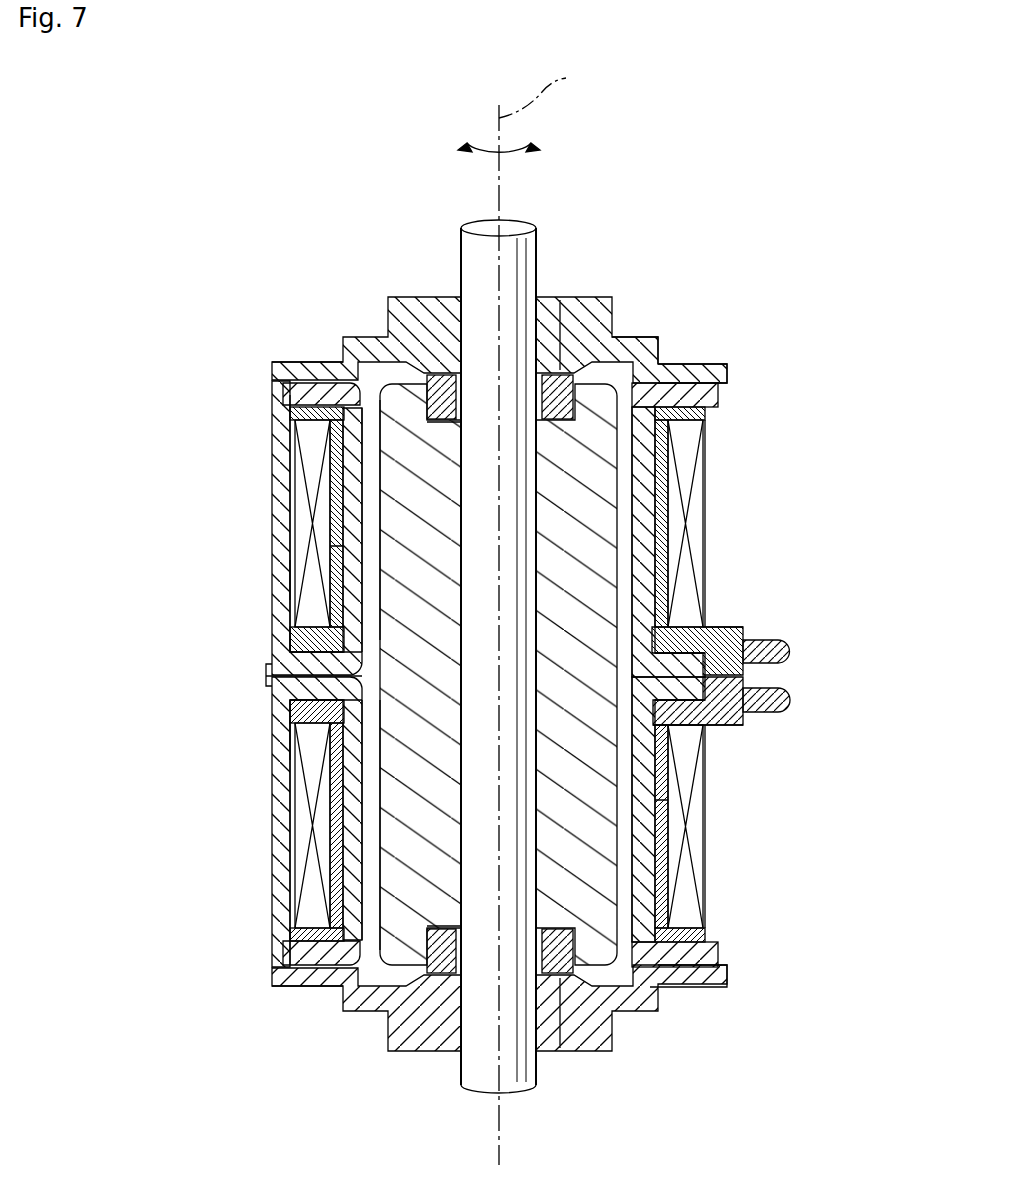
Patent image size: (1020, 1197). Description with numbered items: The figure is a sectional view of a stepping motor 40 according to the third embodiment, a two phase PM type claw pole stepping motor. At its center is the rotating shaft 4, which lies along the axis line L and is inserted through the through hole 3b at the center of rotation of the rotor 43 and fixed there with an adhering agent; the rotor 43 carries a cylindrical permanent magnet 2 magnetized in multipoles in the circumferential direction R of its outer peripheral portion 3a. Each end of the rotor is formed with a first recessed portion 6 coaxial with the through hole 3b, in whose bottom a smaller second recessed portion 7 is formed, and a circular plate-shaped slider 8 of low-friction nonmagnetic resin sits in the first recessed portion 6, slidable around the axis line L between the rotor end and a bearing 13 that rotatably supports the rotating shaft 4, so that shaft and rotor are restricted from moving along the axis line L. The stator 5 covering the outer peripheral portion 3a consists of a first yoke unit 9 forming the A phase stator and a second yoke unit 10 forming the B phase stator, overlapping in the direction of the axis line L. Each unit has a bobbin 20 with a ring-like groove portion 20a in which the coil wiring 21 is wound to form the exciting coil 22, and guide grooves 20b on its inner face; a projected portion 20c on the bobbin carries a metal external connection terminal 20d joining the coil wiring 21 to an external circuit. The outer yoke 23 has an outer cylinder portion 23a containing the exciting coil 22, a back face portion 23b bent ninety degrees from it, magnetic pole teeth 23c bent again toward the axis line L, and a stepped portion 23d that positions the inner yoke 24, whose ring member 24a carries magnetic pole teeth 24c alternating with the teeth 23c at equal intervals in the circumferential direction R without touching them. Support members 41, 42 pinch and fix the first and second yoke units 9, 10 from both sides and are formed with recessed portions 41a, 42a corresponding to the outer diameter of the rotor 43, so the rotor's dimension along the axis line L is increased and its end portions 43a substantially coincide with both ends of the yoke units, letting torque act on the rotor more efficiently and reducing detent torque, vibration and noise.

The permanent magnet 2 is at (460, 618).
The outer peripheral portion 3a is at (377, 430).
The through hole 3b is at (462, 612).
The rotating shaft 4 is at (470, 252).
The stator 5 is at (98, 455).
The first recessed portion 6 is at (440, 400).
The second recessed portion 7 is at (447, 425).
The slider 8 is at (550, 405).
The first yoke unit 9 is at (145, 412).
The second yoke unit 10 is at (145, 797).
The bearing 13 is at (569, 322).
The bobbin 20 is at (736, 618).
The groove portion 20a is at (665, 483).
The guide groove 20b is at (665, 458).
The projected portion 20c is at (740, 627).
The external connection terminal 20d is at (790, 652).
The coil wiring 21 is at (697, 512).
The exciting coil 22 is at (290, 520).
The outer yoke 23 is at (262, 458).
The outer cylinder portion 23a is at (290, 575).
The back face portion 23b is at (295, 674).
The magnetic pole teeth 23c is at (340, 546).
The stepped portion 23d is at (272, 376).
The inner yoke 24 is at (289, 434).
The ring member 24a is at (701, 397).
The magnetic pole teeth 24c is at (663, 536).
The stepping motor 40 is at (756, 236).
The support member 41 is at (727, 368).
The recessed portion 41a is at (362, 362).
The support member 42 is at (694, 980).
The recessed portion 42a is at (360, 1006).
The rotor 43 is at (618, 340).
The end portions 43a is at (597, 385).
The axis line L is at (546, 93).
The circumferential direction R is at (535, 148).